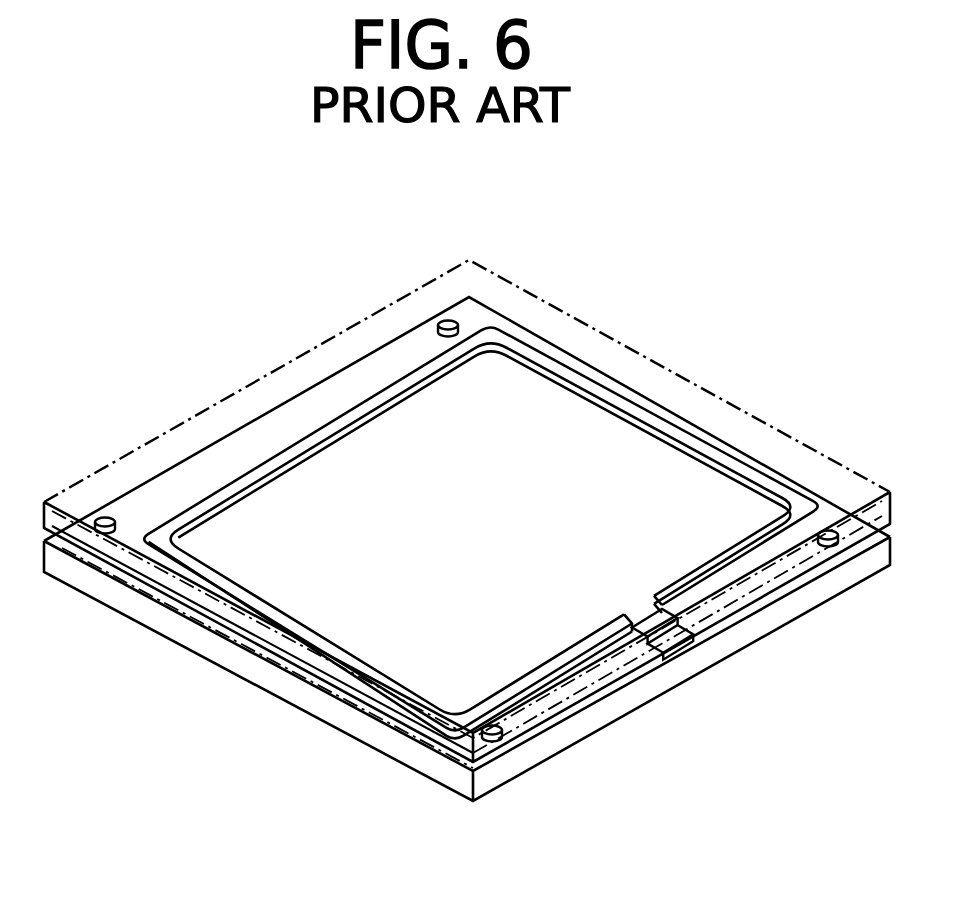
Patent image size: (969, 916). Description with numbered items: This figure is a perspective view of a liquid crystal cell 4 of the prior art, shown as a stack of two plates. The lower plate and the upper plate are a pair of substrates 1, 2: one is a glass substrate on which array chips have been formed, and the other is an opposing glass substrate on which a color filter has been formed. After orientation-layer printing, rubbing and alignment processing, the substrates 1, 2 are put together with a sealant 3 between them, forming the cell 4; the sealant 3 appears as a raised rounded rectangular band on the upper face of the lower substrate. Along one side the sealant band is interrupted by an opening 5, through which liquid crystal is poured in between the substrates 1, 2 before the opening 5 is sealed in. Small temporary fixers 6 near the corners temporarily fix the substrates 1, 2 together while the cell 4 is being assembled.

The substrate 1 is at (540, 298).
The substrate 2 is at (781, 612).
The sealant 3 is at (526, 678).
The cell 4 is at (707, 345).
The opening 5 is at (700, 655).
The temporary fixer 6 is at (105, 518).